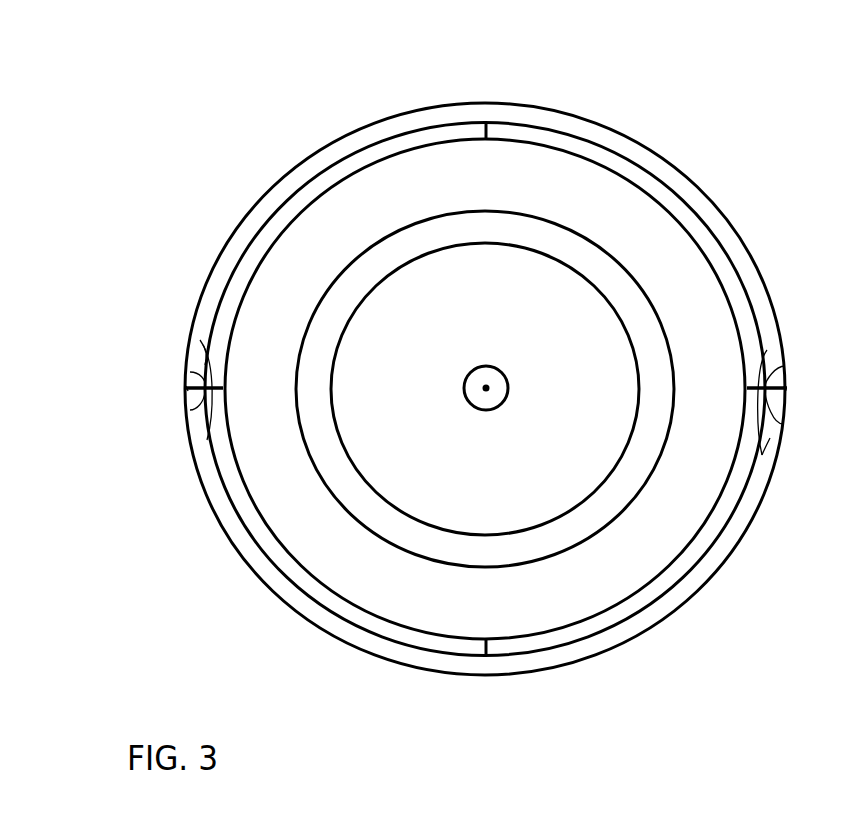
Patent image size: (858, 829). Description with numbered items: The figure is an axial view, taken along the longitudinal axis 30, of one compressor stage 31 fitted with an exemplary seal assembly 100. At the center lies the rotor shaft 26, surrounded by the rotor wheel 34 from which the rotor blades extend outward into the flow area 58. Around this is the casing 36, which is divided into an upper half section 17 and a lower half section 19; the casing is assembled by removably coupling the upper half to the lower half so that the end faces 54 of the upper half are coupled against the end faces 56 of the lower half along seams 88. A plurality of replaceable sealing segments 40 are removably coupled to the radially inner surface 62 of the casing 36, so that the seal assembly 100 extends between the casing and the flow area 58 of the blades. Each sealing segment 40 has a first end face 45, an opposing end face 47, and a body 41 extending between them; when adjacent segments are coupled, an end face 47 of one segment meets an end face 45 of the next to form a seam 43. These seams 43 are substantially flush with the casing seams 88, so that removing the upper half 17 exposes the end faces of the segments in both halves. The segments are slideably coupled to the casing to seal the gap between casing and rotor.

The seal assembly 100 is at (766, 108).
The stage 31 is at (183, 153).
The lower half section 19 is at (318, 627).
The upper half section 17 is at (575, 120).
The casing 36 is at (420, 117).
The radially inner surface 62 is at (340, 155).
The body 41 is at (286, 212).
The sealing segment 40 is at (608, 155).
The opposing end face 47 is at (481, 124).
The first end face 45 is at (205, 365).
The seam 43 is at (225, 388).
The end face 56 is at (190, 372).
The seam 88 is at (185, 388).
The end face 54 is at (190, 410).
The flow area 58 is at (633, 568).
The rotor wheel 34 is at (428, 337).
The rotor shaft 26 is at (505, 373).
The longitudinal axis 30 is at (488, 390).